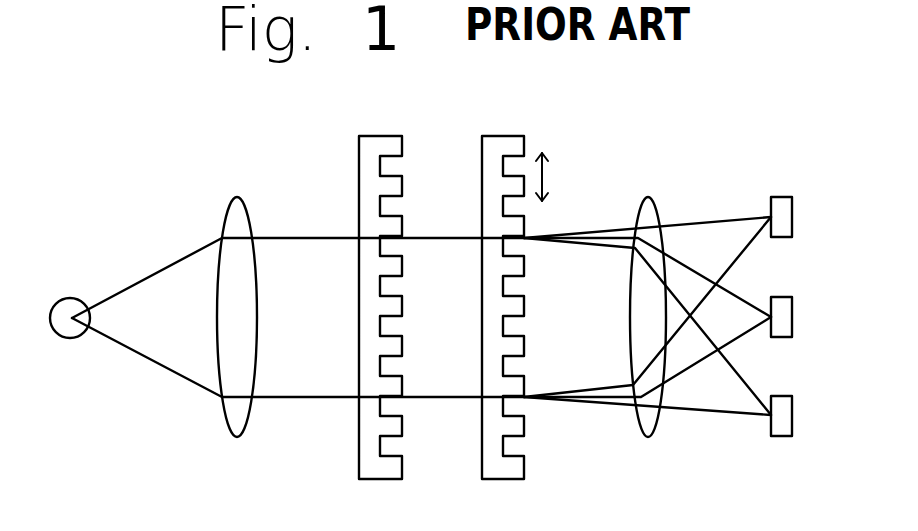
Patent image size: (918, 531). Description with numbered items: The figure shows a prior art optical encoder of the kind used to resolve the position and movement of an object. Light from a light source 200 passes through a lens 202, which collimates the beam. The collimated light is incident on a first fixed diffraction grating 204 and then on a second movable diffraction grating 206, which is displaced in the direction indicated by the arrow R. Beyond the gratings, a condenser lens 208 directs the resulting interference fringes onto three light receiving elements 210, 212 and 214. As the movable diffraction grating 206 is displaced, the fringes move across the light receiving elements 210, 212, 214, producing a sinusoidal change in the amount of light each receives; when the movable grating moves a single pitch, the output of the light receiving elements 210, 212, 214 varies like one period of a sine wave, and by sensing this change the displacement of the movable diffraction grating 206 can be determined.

The light source 200 is at (113, 317).
The lens 202 is at (222, 407).
The first fixed diffraction grating 204 is at (357, 452).
The second movable diffraction grating 206 is at (530, 463).
The condenser lens 208 is at (673, 332).
The light receiving element 210 is at (796, 217).
The light receiving element 212 is at (796, 317).
The light receiving element 214 is at (796, 416).